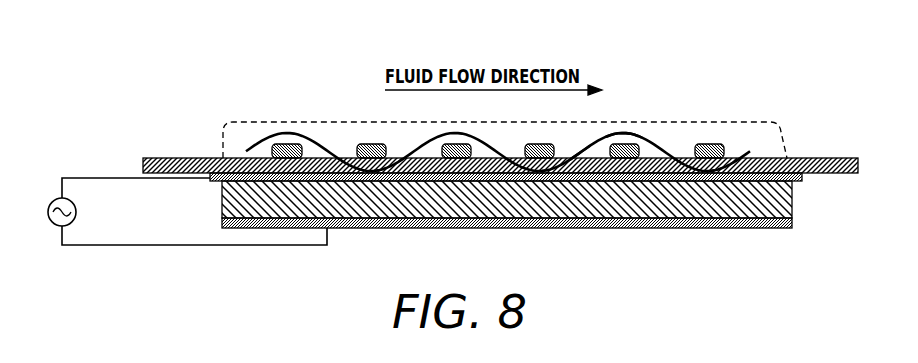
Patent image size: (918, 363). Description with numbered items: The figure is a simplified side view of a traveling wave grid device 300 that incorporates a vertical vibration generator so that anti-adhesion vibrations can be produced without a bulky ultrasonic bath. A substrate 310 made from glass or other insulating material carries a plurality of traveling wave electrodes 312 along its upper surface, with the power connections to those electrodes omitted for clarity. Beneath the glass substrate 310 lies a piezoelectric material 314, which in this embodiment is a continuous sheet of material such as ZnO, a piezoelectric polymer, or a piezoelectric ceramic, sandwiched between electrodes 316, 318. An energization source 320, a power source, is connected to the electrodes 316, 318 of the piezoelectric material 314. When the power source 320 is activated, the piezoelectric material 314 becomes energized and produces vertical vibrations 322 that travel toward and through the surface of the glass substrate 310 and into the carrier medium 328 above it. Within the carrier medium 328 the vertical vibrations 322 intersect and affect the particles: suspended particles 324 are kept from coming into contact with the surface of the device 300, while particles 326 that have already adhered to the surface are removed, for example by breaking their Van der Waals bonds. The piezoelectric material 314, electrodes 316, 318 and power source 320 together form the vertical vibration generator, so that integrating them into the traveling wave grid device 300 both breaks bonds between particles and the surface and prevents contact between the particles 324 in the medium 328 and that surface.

The traveling wave grid device 300 is at (672, 74).
The substrate 310 is at (840, 157).
The traveling wave electrodes 312 is at (368, 143).
The piezoelectric material 314 is at (793, 197).
The electrode 316 is at (797, 182).
The electrode 318 is at (737, 229).
The energization source 320 is at (77, 207).
The vertical vibrations 322 is at (267, 137).
The particles 324 is at (643, 135).
The particles 326 is at (583, 151).
The carrier medium 328 is at (783, 112).